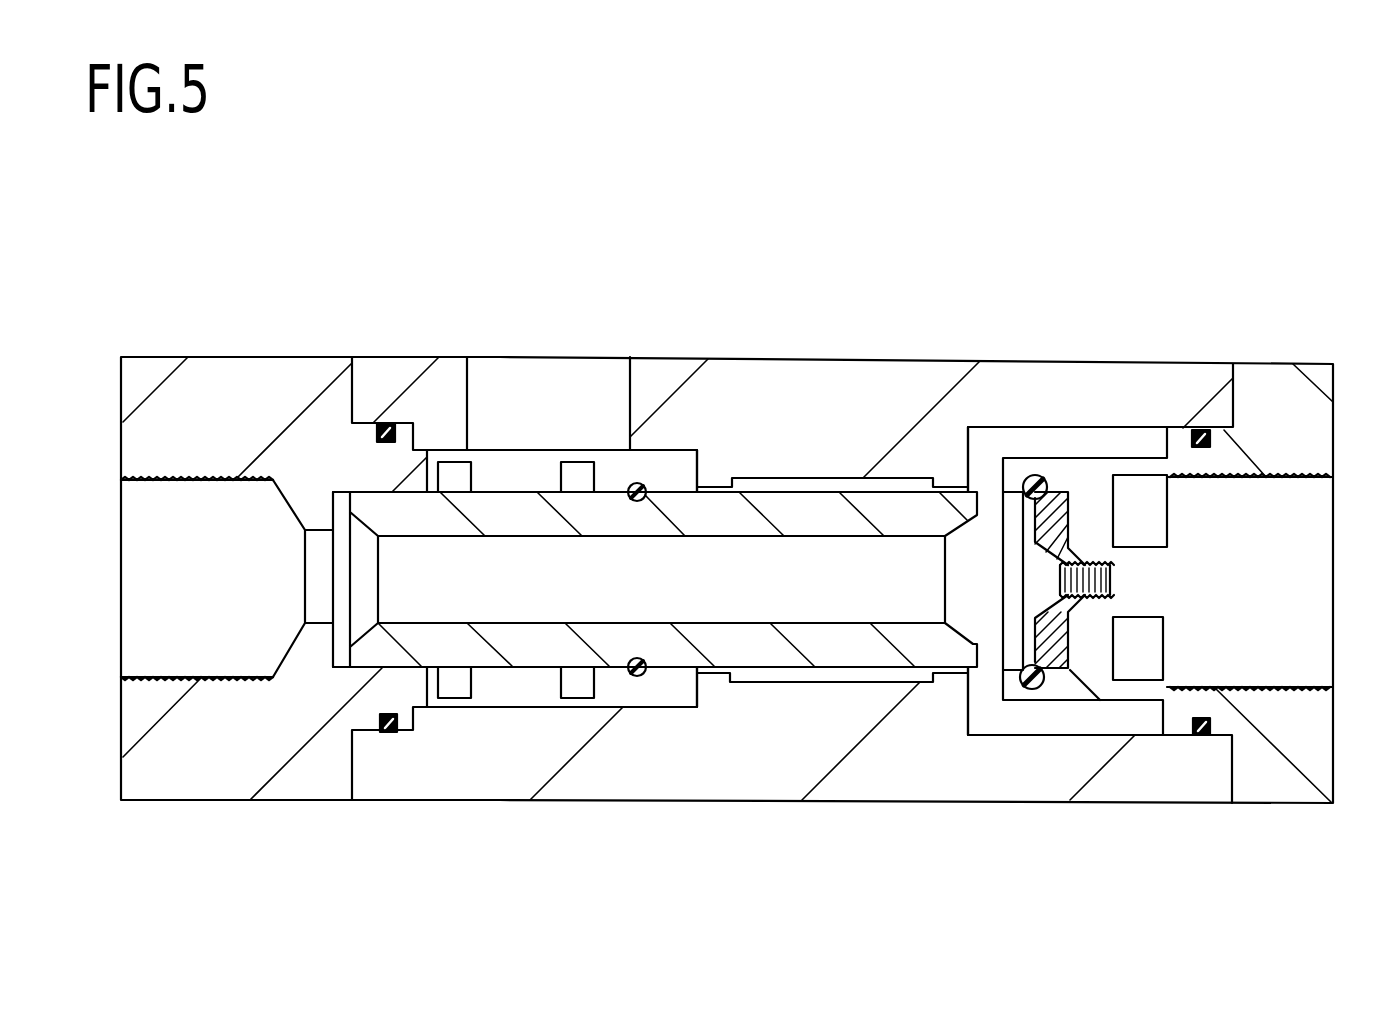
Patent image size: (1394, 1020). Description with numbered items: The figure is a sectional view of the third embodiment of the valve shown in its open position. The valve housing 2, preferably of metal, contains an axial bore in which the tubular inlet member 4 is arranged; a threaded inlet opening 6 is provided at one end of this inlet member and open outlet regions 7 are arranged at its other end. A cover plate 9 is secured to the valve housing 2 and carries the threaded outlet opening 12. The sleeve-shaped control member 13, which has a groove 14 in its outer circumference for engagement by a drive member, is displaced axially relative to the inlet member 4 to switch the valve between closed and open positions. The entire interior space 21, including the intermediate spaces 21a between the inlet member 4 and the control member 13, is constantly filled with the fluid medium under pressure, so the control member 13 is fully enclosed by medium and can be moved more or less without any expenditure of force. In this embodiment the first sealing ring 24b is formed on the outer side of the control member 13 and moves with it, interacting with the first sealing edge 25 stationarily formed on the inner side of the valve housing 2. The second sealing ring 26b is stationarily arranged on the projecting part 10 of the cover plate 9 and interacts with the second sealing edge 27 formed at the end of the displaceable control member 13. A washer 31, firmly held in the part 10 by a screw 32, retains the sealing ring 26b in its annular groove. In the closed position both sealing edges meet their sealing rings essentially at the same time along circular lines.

The valve housing 2 is at (592, 768).
The tubular inlet member 4 is at (187, 790).
The inlet opening 6 is at (204, 483).
The outlet regions 7 is at (1143, 512).
The cover plate 9 is at (1298, 408).
The projecting part of the cover plate 10 is at (1100, 643).
The outlet opening 12 is at (1280, 686).
The sleeve-shaped control member 13 is at (512, 650).
The groove 14 is at (476, 472).
The interior space 21 is at (752, 605).
The intermediate spaces 21a is at (827, 478).
The first sealing ring 24b is at (642, 486).
The first sealing edge 25 is at (697, 487).
The second sealing ring 26b is at (1033, 475).
The second sealing edge 27 is at (975, 672).
The washer 31 is at (1052, 660).
The screw 32 is at (1090, 560).